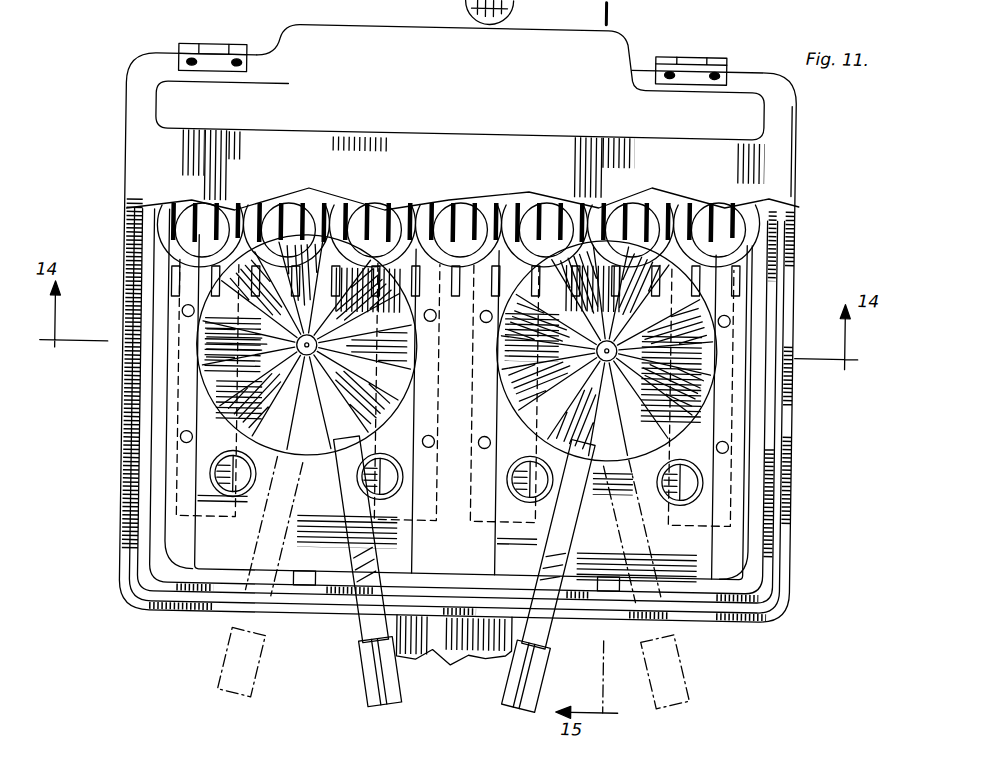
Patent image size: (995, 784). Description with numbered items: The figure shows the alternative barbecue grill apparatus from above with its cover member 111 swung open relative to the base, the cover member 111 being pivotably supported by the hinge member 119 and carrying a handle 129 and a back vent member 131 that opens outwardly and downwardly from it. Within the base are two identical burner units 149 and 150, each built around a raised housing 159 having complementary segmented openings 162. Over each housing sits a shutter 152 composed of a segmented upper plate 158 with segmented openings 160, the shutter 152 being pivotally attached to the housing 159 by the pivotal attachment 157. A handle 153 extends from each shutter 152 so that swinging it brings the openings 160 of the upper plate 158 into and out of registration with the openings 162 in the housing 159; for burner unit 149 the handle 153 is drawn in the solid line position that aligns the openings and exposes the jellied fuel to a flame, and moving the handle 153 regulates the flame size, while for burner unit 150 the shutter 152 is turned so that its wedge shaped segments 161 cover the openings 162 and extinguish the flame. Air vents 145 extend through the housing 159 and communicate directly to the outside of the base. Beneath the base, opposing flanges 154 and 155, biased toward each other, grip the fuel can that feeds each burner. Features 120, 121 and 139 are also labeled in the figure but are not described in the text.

The cover member 111 is at (785, 142).
The hinge member 119 is at (207, 48).
The brush tuft 120 is at (182, 284).
The brush roller 121 is at (190, 235).
The handle 129 is at (437, 652).
The back vent member 131 is at (620, 52).
The cover edge 139 is at (187, 208).
The air vents 145 is at (250, 501).
The burner unit 149 is at (198, 361).
The burner unit 150 is at (704, 306).
The shutter 152 is at (213, 396).
The handle 153 is at (213, 675).
The flange 154 is at (164, 496).
The flange 155 is at (398, 502).
The pivotal attachment 157 is at (597, 347).
The upper plate 158 is at (182, 317).
The raised housing 159 is at (665, 419).
The segmented openings 160 is at (700, 342).
The wedge shaped segments 161 is at (735, 504).
The segmented openings 162 is at (198, 433).